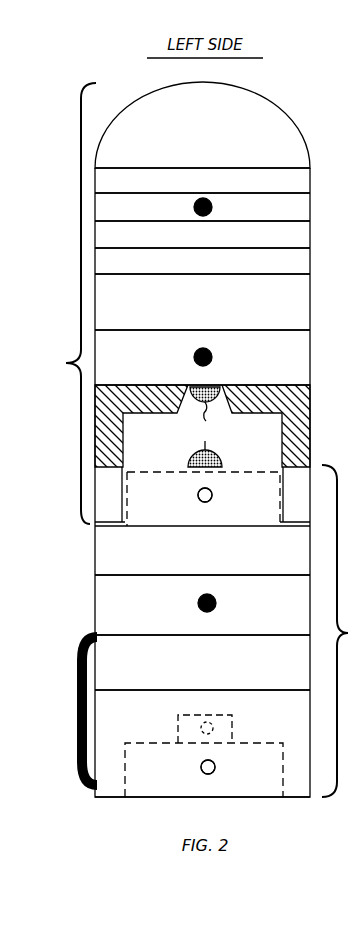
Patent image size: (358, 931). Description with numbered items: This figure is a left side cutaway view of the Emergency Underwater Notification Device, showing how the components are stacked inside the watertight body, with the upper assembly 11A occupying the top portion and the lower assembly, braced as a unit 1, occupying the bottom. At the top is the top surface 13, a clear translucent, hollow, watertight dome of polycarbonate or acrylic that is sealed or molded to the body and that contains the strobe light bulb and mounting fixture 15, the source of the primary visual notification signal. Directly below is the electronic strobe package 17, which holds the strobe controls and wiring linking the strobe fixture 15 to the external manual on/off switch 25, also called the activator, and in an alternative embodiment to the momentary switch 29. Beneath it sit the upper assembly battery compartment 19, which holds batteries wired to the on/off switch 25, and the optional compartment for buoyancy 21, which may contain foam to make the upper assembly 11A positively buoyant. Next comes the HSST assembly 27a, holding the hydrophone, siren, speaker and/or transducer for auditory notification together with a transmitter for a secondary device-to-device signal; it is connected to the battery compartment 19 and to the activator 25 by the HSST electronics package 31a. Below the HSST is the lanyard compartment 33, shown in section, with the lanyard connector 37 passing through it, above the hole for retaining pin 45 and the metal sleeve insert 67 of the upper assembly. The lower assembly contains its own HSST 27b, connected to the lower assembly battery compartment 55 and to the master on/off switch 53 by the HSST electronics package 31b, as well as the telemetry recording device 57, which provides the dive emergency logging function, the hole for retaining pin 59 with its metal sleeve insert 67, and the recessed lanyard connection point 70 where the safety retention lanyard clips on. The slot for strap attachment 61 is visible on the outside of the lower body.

The dummy section 1 is at (340, 631).
The upper assembly 11A is at (80, 363).
The top surface 13 is at (202, 125).
The strobe light bulb and mounting fixture 15 is at (202, 180).
The electronic strobe package 17 is at (202, 207).
The upper assembly battery compartment 19 is at (202, 234).
The compartment for buoyancy 21 is at (202, 261).
The manual on/off switch 25 is at (214, 207).
The HSST assembly 27a is at (202, 302).
The momentary switch 29 is at (214, 356).
The HSST electronics package 31a is at (202, 357).
The lanyard compartment 33 is at (202, 426).
The lanyard connector 37 is at (205, 427).
The hole for retaining pin 45 is at (212, 492).
The master on/off switch 53 is at (218, 602).
The HSST 27b is at (202, 550).
The HSST electronics package 31b is at (202, 605).
The lower assembly battery compartment 55 is at (202, 662).
The telemetry recording device 57 is at (202, 743).
The hole for retaining pin 59 is at (215, 765).
The slot for strap attachment 61 is at (67, 754).
The metal sleeve insert 67 is at (201, 770).
The recessed lanyard connection point 70 is at (246, 730).